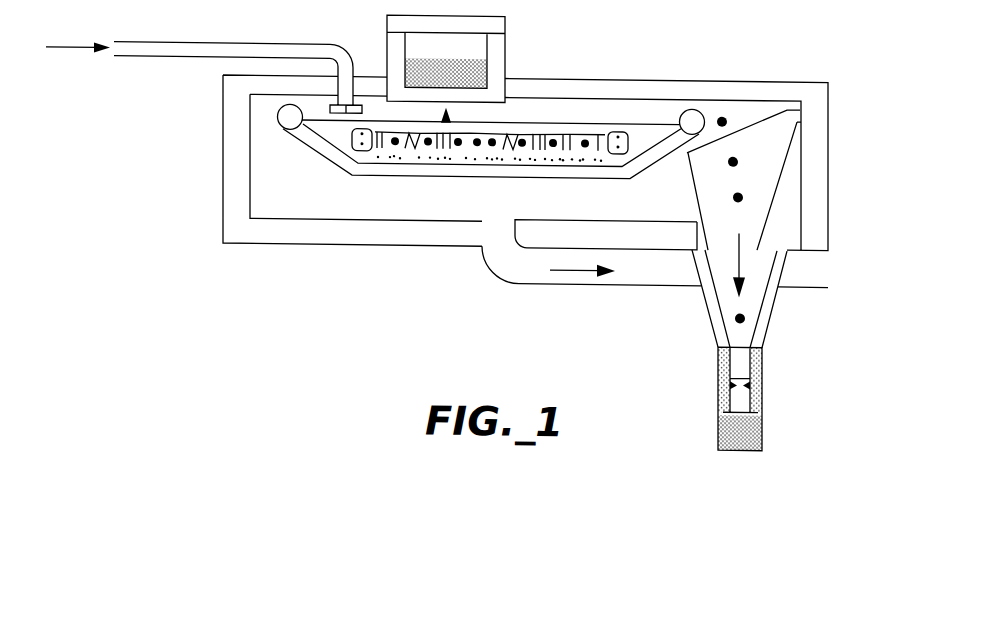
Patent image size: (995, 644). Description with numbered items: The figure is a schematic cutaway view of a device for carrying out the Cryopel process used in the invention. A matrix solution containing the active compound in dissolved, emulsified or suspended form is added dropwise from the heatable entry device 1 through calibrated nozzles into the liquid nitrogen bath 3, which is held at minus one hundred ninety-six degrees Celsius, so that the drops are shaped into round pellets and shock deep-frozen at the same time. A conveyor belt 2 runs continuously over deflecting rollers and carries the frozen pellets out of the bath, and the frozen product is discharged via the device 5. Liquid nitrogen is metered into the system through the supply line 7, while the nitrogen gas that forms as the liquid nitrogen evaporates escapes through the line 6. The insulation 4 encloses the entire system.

The heatable entry device 1 is at (497, 59).
The conveyor belt 2 is at (300, 131).
The liquid nitrogen bath 3 is at (379, 145).
The insulation 4 is at (822, 158).
The device 5 is at (760, 426).
The line 6 is at (637, 277).
The supply line 7 is at (147, 50).